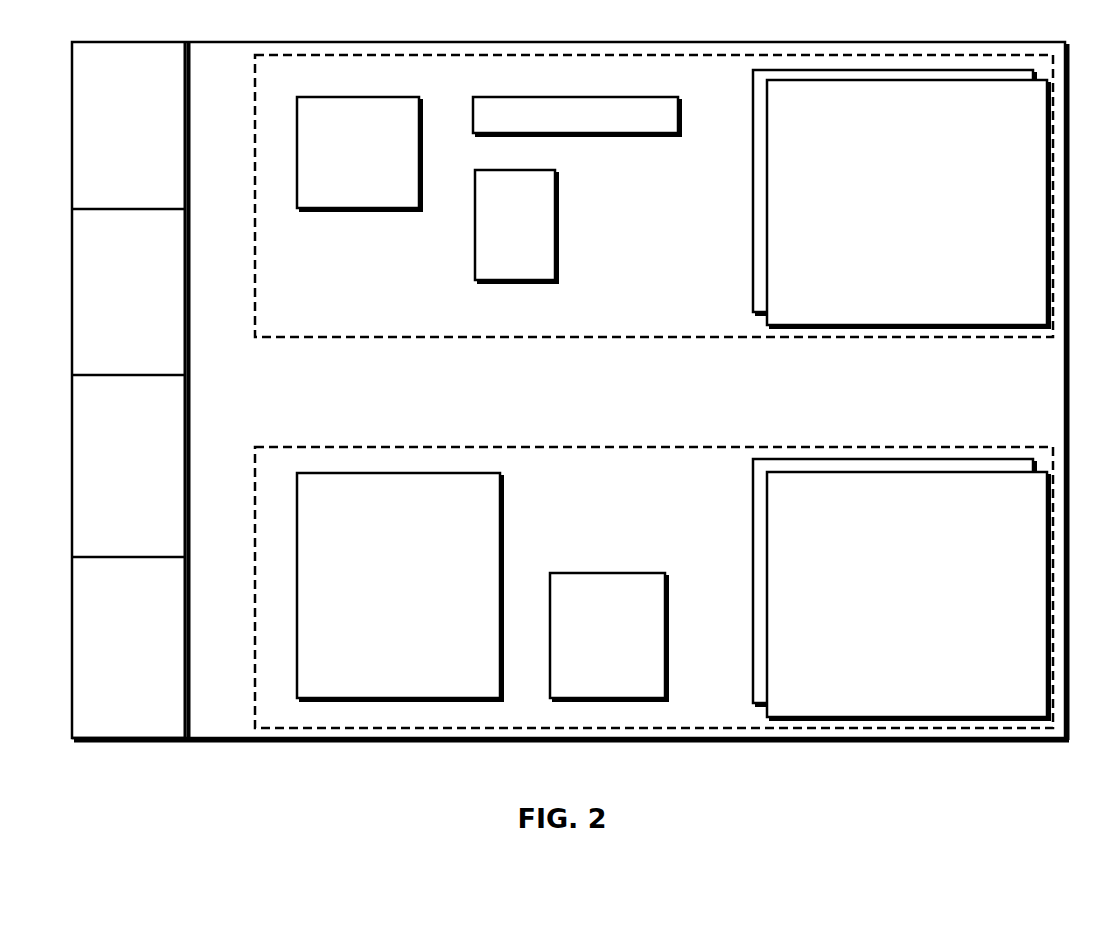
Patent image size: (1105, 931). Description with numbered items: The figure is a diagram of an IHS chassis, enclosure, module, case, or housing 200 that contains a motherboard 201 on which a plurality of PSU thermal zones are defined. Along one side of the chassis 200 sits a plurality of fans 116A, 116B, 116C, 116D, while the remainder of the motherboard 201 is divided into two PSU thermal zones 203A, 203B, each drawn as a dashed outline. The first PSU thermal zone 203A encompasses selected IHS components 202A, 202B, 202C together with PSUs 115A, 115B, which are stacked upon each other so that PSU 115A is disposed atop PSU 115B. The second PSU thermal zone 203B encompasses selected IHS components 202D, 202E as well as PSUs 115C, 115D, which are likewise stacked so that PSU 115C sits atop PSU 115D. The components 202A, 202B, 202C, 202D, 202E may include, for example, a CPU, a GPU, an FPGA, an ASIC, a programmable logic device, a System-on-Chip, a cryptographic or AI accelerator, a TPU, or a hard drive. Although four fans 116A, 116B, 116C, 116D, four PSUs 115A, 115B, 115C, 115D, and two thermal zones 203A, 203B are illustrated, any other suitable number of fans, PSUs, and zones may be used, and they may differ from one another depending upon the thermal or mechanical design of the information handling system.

The IHS chassis 200 is at (545, 794).
The motherboard 201 is at (592, 409).
The fan 116A is at (107, 152).
The fan 116B is at (107, 319).
The fan 116C is at (107, 491).
The fan 116D is at (107, 672).
The PSU 115A is at (887, 228).
The PSU 115B is at (752, 282).
The PSU 115C is at (887, 620).
The PSU 115D is at (752, 672).
The IHS component 202A is at (358, 211).
The IHS component 202B is at (559, 263).
The IHS component 202C is at (625, 137).
The IHS component 202D is at (505, 485).
The IHS component 202E is at (635, 573).
The PSU thermal zone 203A is at (322, 338).
The PSU thermal zone 203B is at (440, 446).